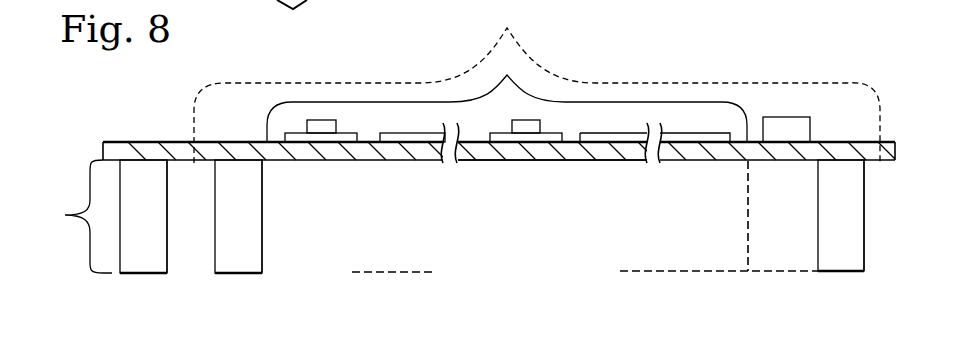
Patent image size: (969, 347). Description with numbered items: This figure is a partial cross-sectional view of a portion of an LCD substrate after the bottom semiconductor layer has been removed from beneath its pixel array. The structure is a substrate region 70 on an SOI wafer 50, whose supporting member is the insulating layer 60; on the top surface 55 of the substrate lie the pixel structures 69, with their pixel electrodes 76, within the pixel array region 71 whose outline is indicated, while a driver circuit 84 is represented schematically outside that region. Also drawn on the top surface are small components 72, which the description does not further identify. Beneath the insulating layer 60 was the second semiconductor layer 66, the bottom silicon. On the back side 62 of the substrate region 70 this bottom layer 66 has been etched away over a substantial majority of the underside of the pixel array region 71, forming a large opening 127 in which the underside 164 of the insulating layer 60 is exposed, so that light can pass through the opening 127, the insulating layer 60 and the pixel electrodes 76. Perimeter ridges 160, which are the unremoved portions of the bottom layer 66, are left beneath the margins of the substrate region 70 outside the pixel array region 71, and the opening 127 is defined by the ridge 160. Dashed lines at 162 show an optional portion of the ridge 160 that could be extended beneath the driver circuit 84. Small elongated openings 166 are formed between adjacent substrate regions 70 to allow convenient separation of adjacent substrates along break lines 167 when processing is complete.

The wafer 50 is at (896, 118).
The top surface of the substrate 55 is at (465, 140).
The insulating layer 60 is at (103, 153).
The back side of substrate region 62 is at (255, 276).
The second semiconductor layer 66 is at (65, 213).
The pixel structures 69 is at (442, 118).
The substrate region 70 is at (537, 85).
The pixel array region 71 is at (507, 97).
The electronic component 72 is at (323, 170).
The pixel electrodes 76 is at (403, 137).
The driver circuit 84 is at (793, 116).
The opening 127 is at (263, 220).
The perimeter ridge 160 is at (140, 263).
The optional ridge portion 162 is at (807, 268).
The underside of insulating layer 164 is at (502, 161).
The elongated openings 166 is at (168, 237).
The break lines 167 is at (194, 162).